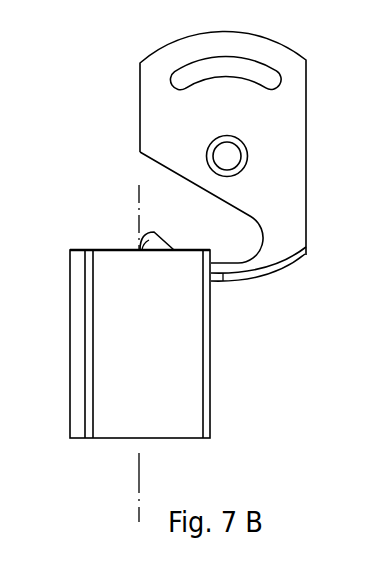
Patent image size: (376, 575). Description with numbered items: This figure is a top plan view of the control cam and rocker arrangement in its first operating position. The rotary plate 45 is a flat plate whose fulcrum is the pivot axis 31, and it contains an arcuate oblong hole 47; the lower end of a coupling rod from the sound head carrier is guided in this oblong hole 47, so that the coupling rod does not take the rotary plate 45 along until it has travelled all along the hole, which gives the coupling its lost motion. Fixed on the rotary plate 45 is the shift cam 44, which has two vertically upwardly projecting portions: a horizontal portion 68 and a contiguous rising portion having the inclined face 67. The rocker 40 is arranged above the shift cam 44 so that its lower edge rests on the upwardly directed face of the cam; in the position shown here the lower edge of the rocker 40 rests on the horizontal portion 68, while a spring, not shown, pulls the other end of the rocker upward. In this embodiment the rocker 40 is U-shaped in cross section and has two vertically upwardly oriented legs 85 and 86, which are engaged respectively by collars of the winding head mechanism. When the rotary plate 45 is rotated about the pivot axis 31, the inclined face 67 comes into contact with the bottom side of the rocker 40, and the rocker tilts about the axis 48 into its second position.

The rotary plate 45 is at (288, 112).
The arcuate oblong hole 47 is at (264, 66).
The pivot axis 31 is at (233, 159).
The inclined face 67 is at (293, 262).
The rocker 40 is at (200, 376).
The leg 86 is at (210, 337).
The leg 85 is at (95, 268).
The horizontal portion 68 is at (141, 246).
The axis 48 is at (137, 468).
The shift cam 44 is at (276, 310).